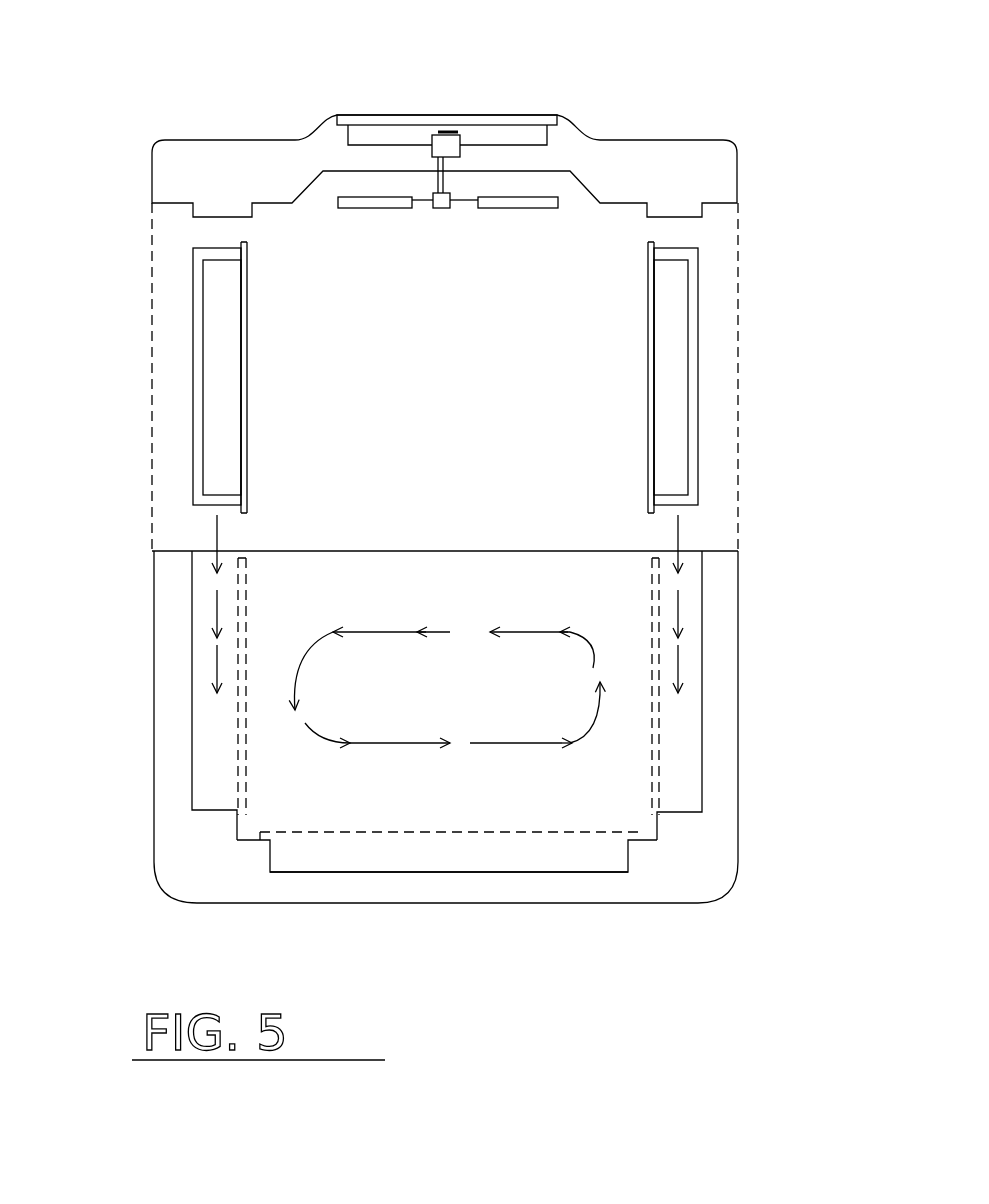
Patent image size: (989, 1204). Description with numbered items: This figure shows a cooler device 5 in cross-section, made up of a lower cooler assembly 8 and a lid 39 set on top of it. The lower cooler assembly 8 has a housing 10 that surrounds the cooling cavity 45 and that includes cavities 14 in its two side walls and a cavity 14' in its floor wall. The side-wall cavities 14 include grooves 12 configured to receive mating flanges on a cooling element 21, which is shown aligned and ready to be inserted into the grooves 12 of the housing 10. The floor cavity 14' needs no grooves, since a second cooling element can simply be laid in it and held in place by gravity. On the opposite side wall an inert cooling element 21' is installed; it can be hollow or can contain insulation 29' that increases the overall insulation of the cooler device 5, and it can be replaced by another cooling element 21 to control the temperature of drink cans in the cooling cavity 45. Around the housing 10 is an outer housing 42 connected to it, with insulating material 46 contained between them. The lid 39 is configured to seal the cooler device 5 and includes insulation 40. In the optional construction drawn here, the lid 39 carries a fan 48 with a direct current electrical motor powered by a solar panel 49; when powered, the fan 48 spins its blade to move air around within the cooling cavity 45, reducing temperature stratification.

The cooler device 5 is at (183, 68).
The solar panel 49 is at (405, 113).
The lid 39 is at (663, 140).
The insulation 40 is at (677, 178).
The fan 48 is at (502, 210).
The inert cooling element 21' is at (143, 377).
The insulation 29' is at (143, 377).
The cooling element 21 is at (742, 377).
The cooling cavity 45 is at (437, 600).
The housing 10 is at (702, 612).
The grooves 12 is at (241, 611).
The lower cooler assembly 8 is at (155, 608).
The cavities 14 is at (443, 653).
The outer housing 42 is at (738, 807).
The insulating material 46 is at (687, 860).
The cavity 14' is at (449, 912).